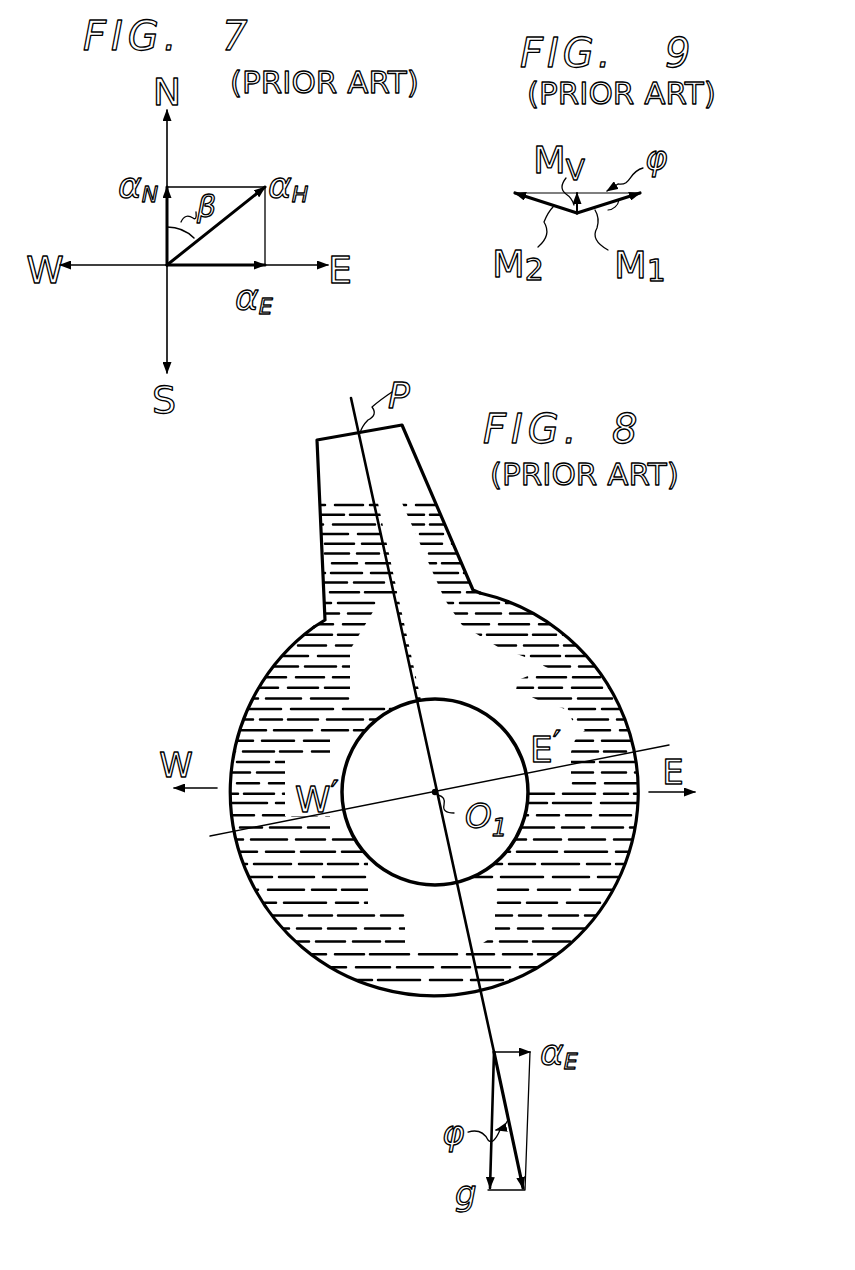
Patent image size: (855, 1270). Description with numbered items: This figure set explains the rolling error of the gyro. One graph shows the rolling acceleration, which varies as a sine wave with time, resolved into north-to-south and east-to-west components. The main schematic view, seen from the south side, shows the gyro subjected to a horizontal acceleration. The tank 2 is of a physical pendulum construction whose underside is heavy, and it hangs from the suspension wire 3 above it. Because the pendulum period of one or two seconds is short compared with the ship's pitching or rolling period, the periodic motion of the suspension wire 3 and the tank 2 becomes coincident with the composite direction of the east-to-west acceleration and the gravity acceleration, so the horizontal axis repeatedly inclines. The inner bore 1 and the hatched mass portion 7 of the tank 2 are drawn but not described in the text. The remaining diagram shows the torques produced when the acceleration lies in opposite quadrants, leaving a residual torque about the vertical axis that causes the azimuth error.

The central bore 1 is at (362, 730).
The tank 2 is at (532, 972).
The suspension wire 3 is at (385, 556).
The hatched mass portion 7 is at (580, 886).